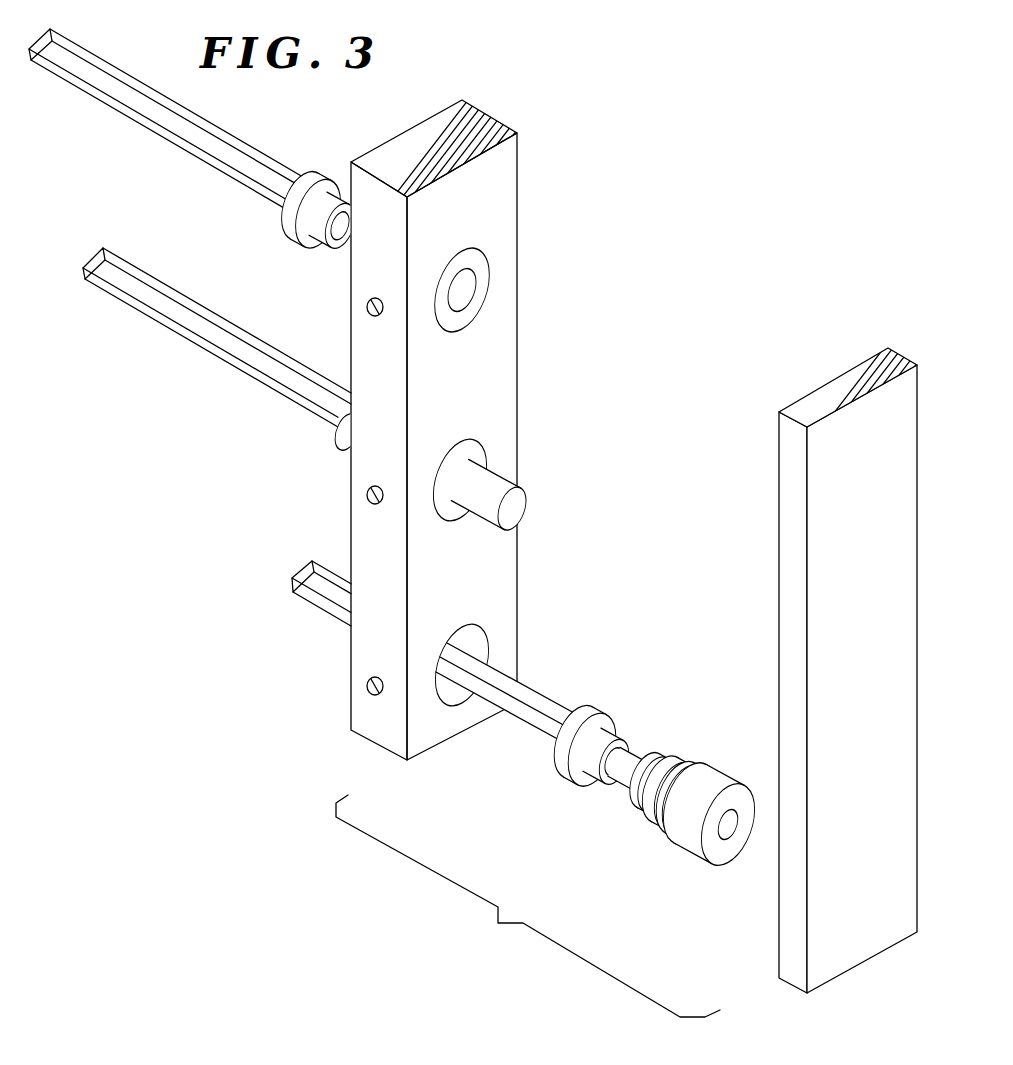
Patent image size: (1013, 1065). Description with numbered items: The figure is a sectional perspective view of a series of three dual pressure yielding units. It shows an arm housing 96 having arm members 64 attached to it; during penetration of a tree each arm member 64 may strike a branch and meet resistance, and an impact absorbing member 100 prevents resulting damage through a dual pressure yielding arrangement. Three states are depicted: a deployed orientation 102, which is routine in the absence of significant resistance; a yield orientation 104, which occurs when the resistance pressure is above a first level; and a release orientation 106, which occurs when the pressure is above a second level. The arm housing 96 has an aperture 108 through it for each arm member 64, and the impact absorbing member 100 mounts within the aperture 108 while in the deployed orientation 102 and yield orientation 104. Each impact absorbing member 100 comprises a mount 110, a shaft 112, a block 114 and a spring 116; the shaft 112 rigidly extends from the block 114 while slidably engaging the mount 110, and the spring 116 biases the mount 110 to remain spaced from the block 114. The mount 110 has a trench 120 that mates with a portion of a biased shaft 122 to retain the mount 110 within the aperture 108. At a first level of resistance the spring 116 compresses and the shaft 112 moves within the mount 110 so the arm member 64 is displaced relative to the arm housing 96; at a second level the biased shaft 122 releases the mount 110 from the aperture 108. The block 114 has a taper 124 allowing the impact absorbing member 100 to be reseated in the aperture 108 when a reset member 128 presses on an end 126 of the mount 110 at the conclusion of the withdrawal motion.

The arm member 64 is at (233, 171).
The arm housing 96 is at (518, 175).
The impact absorbing member 100 is at (300, 238).
The deployed orientation 102 is at (480, 272).
The yield orientation 104 is at (490, 481).
The release orientation 106 is at (655, 818).
The aperture 108 is at (476, 642).
The mount 110 is at (702, 855).
The shaft 112 is at (625, 790).
The block 114 is at (605, 712).
The spring 116 is at (658, 752).
The trench 120 is at (668, 832).
The biased shaft 122 is at (366, 686).
The taper 124 is at (552, 748).
The end 126 is at (722, 852).
The reset member 128 is at (778, 456).